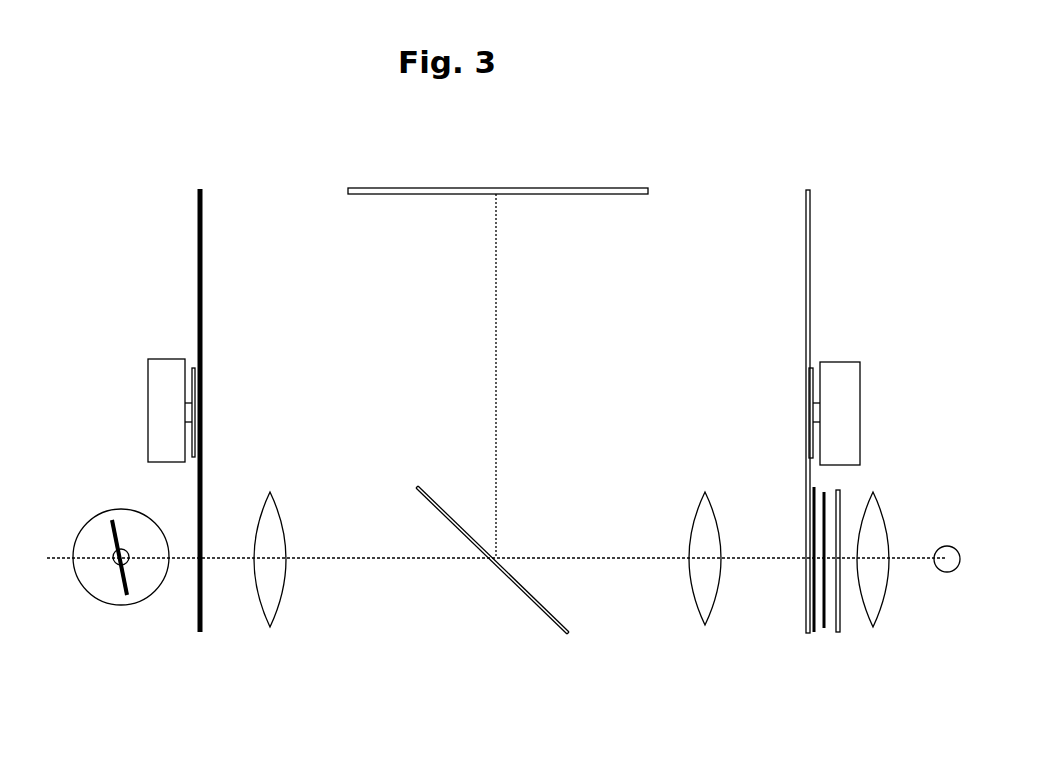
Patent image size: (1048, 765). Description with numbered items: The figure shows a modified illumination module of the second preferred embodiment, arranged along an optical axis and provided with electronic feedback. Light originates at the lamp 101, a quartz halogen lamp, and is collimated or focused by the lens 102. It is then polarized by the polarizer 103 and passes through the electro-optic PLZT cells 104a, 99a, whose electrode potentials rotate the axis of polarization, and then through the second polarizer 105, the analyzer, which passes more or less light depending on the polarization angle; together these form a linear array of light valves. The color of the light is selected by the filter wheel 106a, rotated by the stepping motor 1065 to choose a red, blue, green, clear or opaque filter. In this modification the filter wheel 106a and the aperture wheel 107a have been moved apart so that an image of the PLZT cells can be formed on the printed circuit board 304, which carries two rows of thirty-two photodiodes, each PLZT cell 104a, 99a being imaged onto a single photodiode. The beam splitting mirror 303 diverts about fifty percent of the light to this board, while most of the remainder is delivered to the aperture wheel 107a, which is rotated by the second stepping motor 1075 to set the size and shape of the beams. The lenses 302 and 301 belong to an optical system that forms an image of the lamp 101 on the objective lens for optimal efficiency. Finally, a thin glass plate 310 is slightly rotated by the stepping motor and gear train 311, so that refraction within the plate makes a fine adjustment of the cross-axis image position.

The aperture wheel 107a is at (199, 293).
The second stepping motor 1075 is at (148, 359).
The stepping motor and gear train 311 is at (121, 605).
The thin glass plate 310 is at (127, 595).
The lens 301 is at (270, 492).
The printed circuit board 304 is at (648, 193).
The beam splitting mirror 303 is at (418, 487).
The lens 302 is at (705, 492).
The filter wheel 106a is at (811, 266).
The stepping motor 1065 is at (860, 362).
The second polarizer 105 is at (810, 634).
The PLZT cell 104a is at (824, 629).
The polarizer 103 is at (838, 633).
The PLZT cell 99a is at (827, 491).
The lens 102 is at (874, 492).
The lamp 101 is at (959, 554).